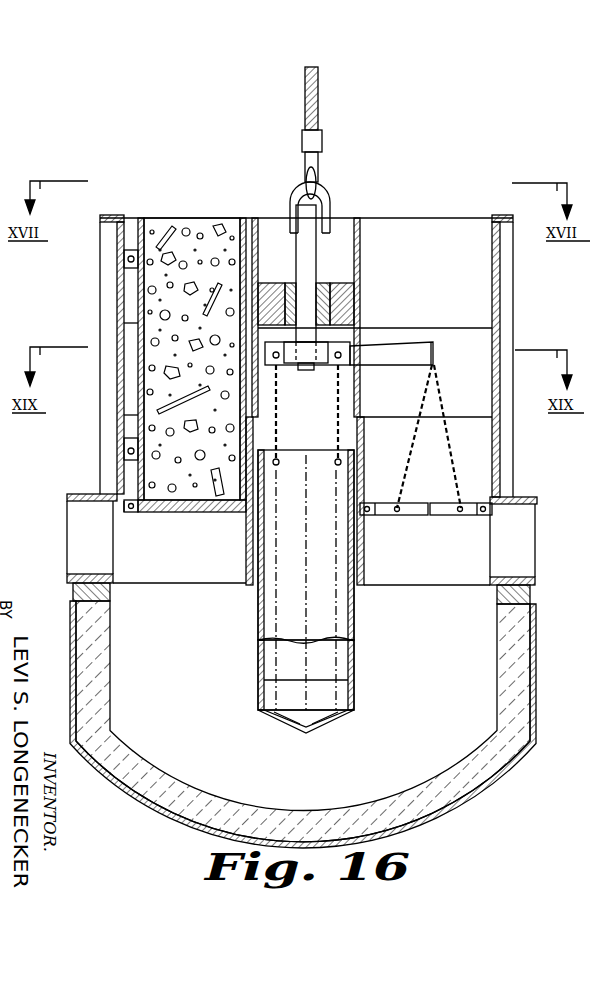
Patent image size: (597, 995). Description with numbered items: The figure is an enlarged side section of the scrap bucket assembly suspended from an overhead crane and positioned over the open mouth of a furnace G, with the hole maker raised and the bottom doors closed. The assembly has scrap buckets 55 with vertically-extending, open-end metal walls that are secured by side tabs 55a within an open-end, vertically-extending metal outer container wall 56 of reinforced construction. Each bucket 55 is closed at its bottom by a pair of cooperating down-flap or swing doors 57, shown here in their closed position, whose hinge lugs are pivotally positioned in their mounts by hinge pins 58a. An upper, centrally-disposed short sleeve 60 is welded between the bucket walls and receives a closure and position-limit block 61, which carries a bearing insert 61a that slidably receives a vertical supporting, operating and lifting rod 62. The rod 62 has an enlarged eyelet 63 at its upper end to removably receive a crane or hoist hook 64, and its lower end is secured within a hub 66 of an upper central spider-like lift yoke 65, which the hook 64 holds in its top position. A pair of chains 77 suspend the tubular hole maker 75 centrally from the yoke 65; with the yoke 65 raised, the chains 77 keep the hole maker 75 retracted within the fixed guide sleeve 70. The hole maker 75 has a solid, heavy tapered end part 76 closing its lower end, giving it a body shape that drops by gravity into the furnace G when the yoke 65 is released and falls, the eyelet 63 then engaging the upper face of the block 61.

The scrap bucket 55 is at (148, 232).
The side tabs 55a is at (123, 247).
The outer container wall 56 is at (118, 296).
The swing doors 57 is at (163, 517).
The hinge pin 58a is at (367, 517).
The sleeve 60 is at (360, 256).
The block 61 is at (360, 300).
The bearing insert 61a is at (358, 322).
The lifting rod 62 is at (299, 260).
The eyelet 63 is at (331, 203).
The crane hook 64 is at (319, 165).
The lift yoke 65 is at (372, 368).
The hub 66 is at (290, 366).
The guide sleeve 70 is at (258, 428).
The hole maker 75 is at (355, 665).
The tapered end part 76 is at (298, 720).
The chains 77 is at (280, 462).
The furnace G is at (104, 704).